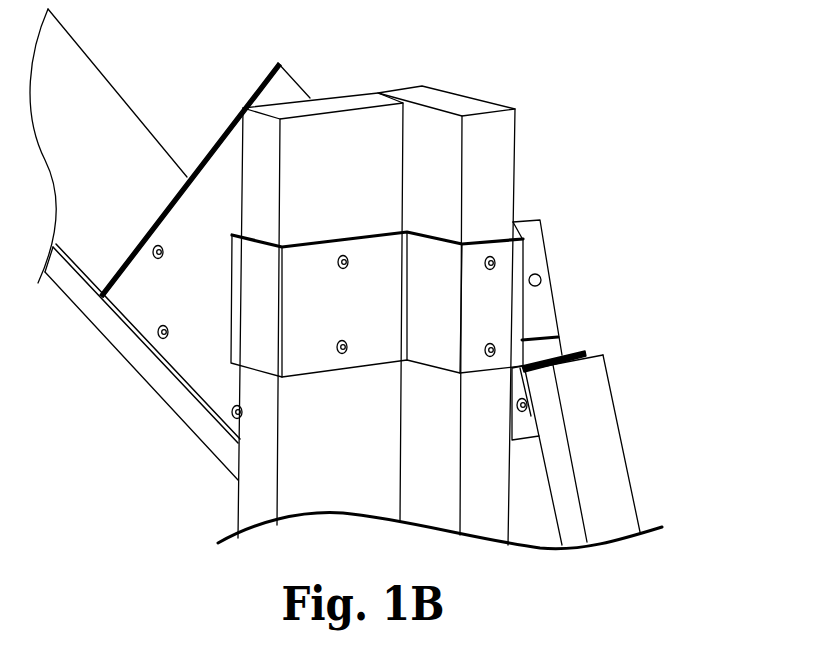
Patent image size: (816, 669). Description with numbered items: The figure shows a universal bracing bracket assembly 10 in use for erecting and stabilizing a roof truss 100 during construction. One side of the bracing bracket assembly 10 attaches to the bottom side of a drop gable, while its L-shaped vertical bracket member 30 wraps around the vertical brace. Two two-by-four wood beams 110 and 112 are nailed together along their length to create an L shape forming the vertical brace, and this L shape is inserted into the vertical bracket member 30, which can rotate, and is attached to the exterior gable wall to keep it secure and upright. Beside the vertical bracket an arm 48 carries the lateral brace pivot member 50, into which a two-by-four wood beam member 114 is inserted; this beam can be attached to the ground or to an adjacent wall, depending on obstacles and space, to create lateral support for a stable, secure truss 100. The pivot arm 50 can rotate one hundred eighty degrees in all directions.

The universal bracing bracket assembly 10 is at (260, 86).
The vertical bracket member 30 is at (368, 233).
The arm 48 is at (543, 233).
The lateral brace pivot member 50 is at (578, 353).
The truss 100 is at (140, 373).
The wood beam 110 is at (348, 92).
The wood beam 112 is at (455, 92).
The wood beam member 114 is at (620, 424).